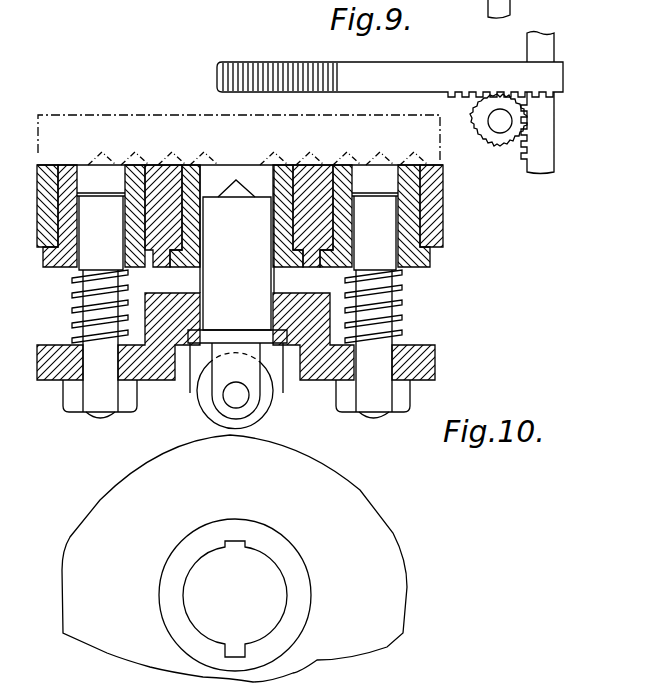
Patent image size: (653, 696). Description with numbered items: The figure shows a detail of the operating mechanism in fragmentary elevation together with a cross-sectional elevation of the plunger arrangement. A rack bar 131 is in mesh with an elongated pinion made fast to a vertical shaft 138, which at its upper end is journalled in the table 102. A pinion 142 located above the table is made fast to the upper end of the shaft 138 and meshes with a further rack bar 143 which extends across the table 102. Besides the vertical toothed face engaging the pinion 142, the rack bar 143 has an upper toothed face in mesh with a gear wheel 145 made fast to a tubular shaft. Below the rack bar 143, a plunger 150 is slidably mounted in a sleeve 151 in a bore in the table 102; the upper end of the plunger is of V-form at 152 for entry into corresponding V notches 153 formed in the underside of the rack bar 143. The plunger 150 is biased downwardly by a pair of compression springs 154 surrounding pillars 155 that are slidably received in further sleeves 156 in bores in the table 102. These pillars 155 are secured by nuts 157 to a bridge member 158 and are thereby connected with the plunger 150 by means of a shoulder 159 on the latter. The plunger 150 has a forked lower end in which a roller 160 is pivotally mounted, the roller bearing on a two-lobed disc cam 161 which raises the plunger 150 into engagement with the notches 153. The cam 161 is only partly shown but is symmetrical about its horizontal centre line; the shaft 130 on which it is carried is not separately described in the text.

In FIG. 9, the table 102 is at (438, 236).
In FIG. 10, the shaft 130 is at (246, 609).
In FIG. 9, the rack bar 131 is at (552, 146).
In FIG. 9, the vertical shaft 138 is at (505, 121).
In FIG. 9, the pinion 142 is at (494, 148).
In FIG. 9, the rack bar 143 is at (99, 118).
In FIG. 9, the gear wheel 145 is at (288, 62).
In FIG. 9, the plunger 150 is at (240, 272).
In FIG. 9, the sleeve 151 is at (288, 176).
In FIG. 9, the V-form upper end 152 is at (232, 180).
In FIG. 9, the V notches 153 is at (172, 153).
In FIG. 9, the compression springs 154 is at (72, 284).
In FIG. 9, the pillars 155 is at (101, 262).
In FIG. 9, the sleeves 156 is at (69, 167).
In FIG. 9, the nuts 157 is at (68, 408).
In FIG. 9, the bridge member 158 is at (437, 374).
In FIG. 9, the shoulder 159 is at (283, 393).
In FIG. 9, the roller 160 is at (199, 411).
In FIG. 10, the disc cam 161 is at (170, 495).